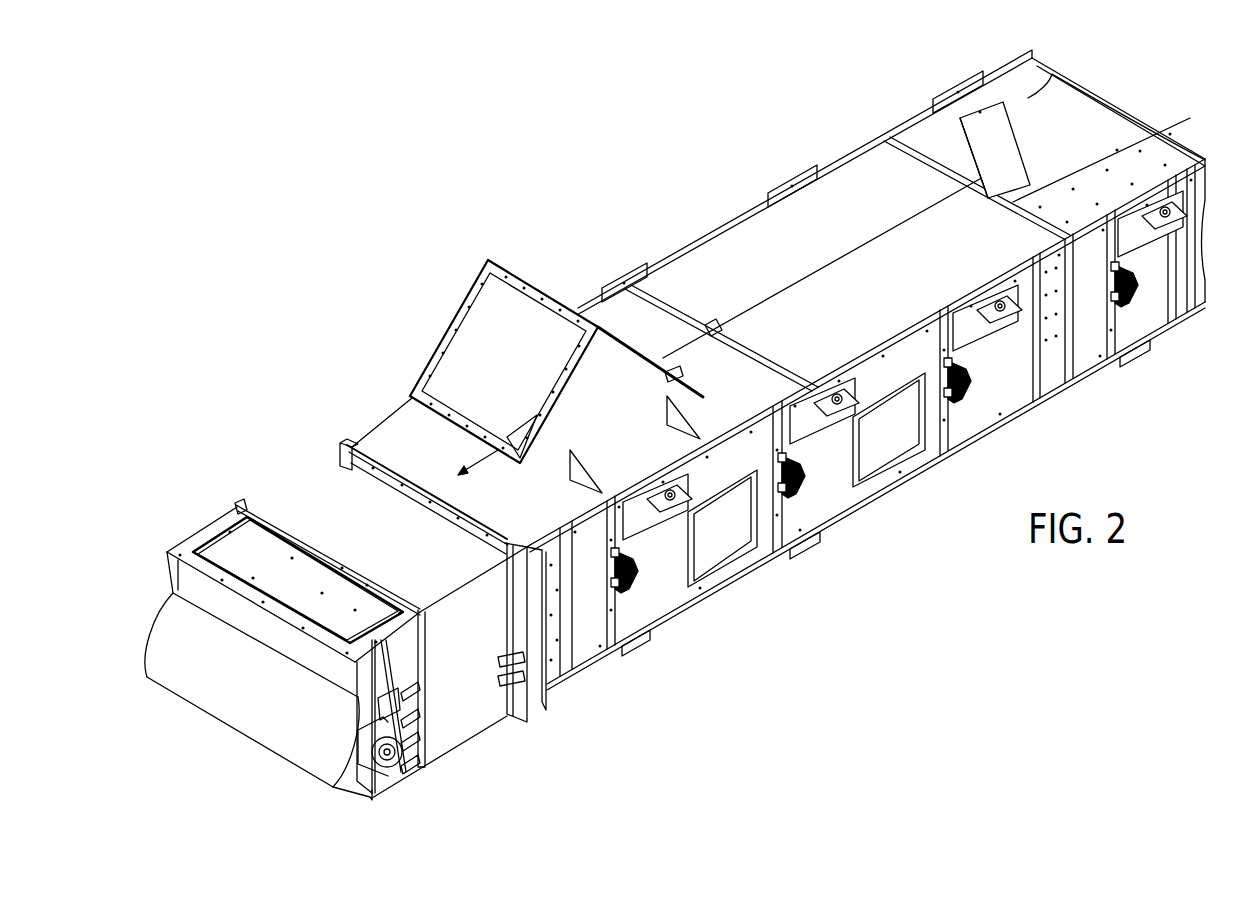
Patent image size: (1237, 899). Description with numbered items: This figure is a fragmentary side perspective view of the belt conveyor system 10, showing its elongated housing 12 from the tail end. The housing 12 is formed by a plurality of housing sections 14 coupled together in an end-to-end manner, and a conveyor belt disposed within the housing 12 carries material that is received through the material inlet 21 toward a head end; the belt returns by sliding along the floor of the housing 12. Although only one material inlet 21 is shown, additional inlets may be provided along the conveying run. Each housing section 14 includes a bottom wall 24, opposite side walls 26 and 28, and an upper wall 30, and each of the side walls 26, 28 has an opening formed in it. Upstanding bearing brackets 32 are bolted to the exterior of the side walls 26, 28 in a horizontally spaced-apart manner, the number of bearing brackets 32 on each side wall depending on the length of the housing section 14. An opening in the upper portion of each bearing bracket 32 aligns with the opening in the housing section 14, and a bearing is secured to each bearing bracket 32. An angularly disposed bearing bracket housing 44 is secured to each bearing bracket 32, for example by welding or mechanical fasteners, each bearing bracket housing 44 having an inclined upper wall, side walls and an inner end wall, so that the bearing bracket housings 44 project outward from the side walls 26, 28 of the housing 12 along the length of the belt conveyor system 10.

The belt conveyor system 10 is at (411, 168).
The elongated housing 12 is at (691, 241).
The housing section 14 is at (737, 217).
The material inlet 21 is at (520, 272).
The bottom wall 24 is at (693, 600).
The side wall 26 is at (1048, 73).
The side wall 28 is at (765, 527).
The upper wall 30 is at (903, 148).
The bearing bracket 32 is at (815, 498).
The bearing bracket housing 44 is at (792, 168).